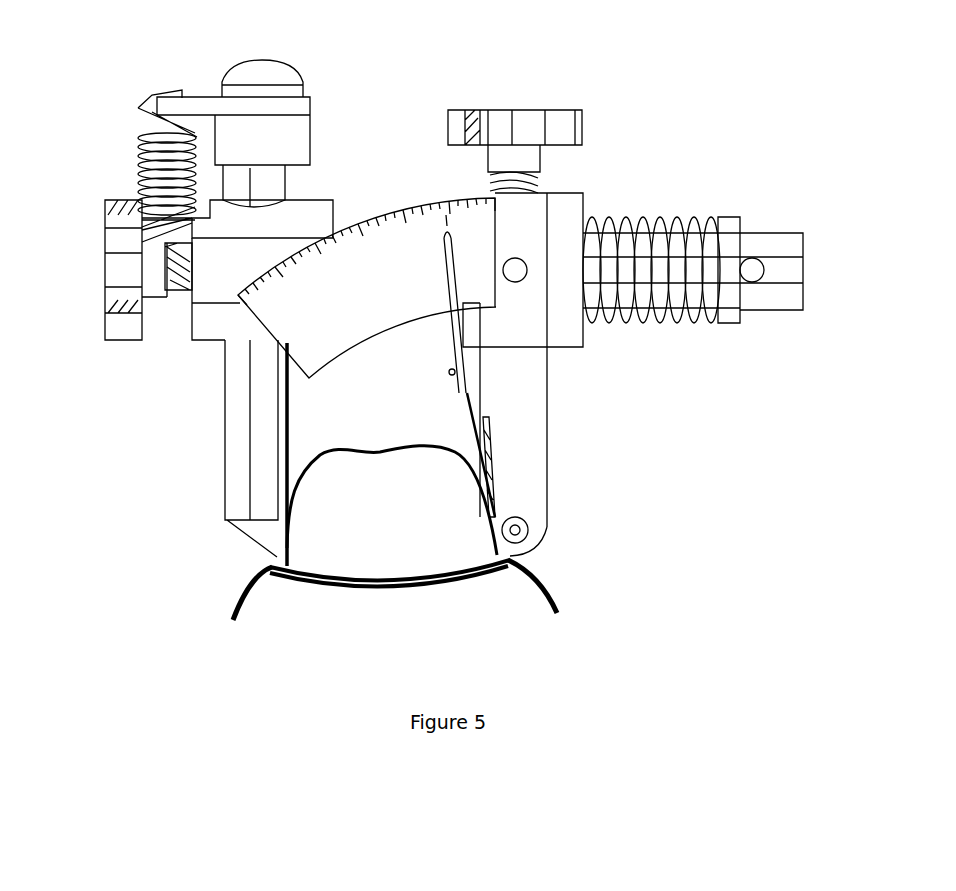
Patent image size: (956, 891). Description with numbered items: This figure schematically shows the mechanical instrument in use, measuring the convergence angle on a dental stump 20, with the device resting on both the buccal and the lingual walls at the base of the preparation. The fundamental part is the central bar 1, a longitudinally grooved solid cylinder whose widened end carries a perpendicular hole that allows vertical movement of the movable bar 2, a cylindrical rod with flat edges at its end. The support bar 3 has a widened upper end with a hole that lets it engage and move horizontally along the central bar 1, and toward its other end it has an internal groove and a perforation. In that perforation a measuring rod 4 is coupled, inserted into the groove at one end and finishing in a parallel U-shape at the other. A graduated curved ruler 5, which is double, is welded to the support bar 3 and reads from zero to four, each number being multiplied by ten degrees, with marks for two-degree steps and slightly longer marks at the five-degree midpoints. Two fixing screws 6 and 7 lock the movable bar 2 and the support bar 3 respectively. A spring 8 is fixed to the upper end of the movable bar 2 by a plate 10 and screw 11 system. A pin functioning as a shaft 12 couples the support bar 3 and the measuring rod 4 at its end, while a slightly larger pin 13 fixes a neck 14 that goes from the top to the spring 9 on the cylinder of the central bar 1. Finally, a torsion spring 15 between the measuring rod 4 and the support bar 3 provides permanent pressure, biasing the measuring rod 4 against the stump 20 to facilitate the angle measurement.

The central bar 1 is at (795, 248).
The movable bar 2 is at (235, 398).
The support bar 3 is at (548, 410).
The measuring rod 4 is at (463, 392).
The graduated curved ruler 5 is at (396, 208).
The fixing screw 6 is at (130, 265).
The fixing screw 7 is at (540, 108).
The spring 8 is at (135, 150).
The spring 9 is at (655, 215).
The plate 10 is at (312, 105).
The screw 11 is at (245, 62).
The shaft 12 is at (522, 530).
The pin 13 is at (752, 276).
The neck 14 is at (735, 216).
The torsion spring 15 is at (492, 438).
The stump 20 is at (395, 533).